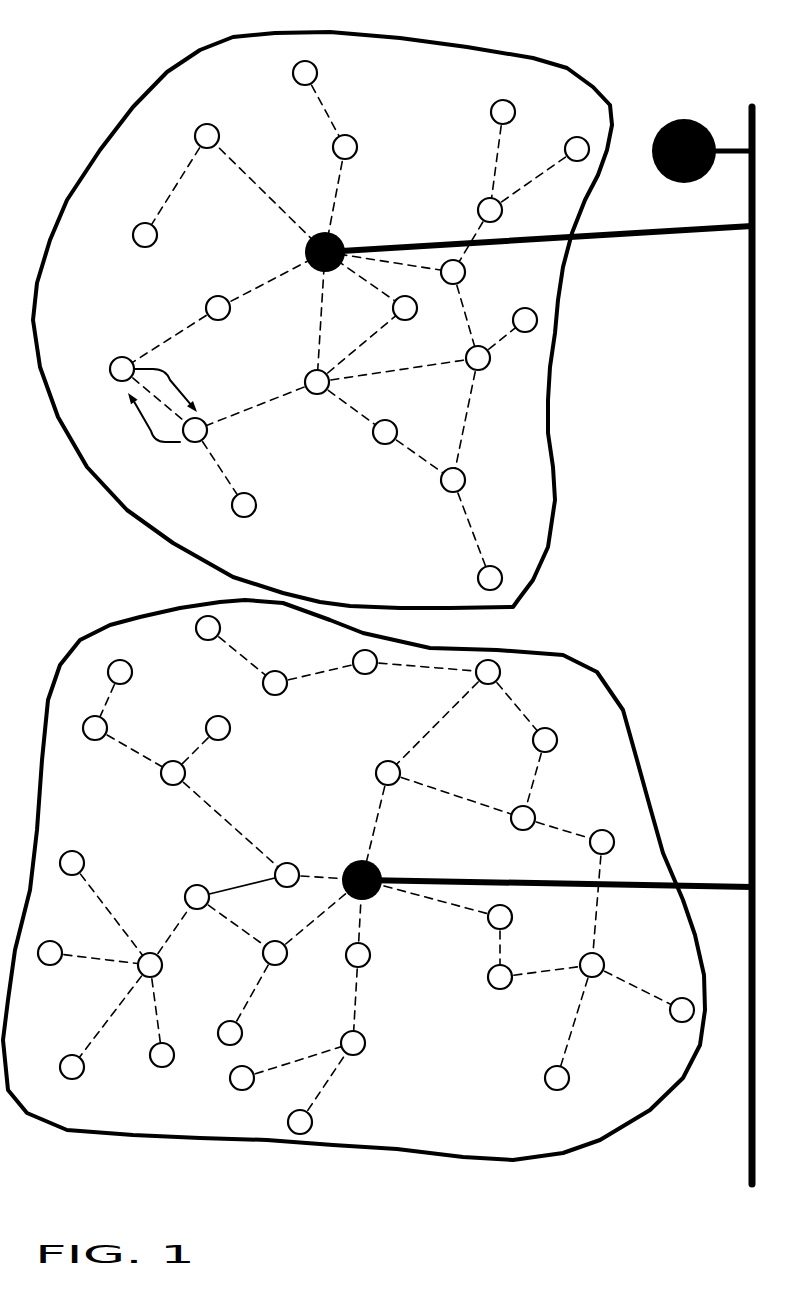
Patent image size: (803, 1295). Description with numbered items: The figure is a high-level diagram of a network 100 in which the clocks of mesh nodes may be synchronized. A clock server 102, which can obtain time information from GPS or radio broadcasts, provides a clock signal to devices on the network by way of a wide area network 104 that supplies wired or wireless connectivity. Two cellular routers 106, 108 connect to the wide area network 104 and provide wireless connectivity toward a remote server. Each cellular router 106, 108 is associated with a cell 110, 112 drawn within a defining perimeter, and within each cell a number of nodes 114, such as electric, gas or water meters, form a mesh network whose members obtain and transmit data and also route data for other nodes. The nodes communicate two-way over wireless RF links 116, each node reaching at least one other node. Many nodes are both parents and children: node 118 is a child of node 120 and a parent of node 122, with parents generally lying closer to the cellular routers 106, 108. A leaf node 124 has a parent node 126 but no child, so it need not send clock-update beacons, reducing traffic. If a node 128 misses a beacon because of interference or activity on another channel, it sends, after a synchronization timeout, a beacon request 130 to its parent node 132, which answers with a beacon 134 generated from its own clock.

The network 100 is at (646, 63).
The clock server 102 is at (686, 118).
The wide area network 104 is at (748, 522).
The cellular router 106 is at (305, 248).
The cellular router 108 is at (355, 865).
The cell 110 is at (175, 70).
The cell 112 is at (110, 626).
The node 114 is at (196, 132).
The RF link 116 is at (330, 120).
The node 118 is at (498, 990).
The node 120 is at (492, 928).
The node 122 is at (603, 958).
The leaf node 124 is at (478, 573).
The parent node 126 is at (465, 478).
The node 128 is at (194, 443).
The beacon request 130 is at (151, 430).
The parent node 132 is at (117, 358).
The beacon 134 is at (168, 378).